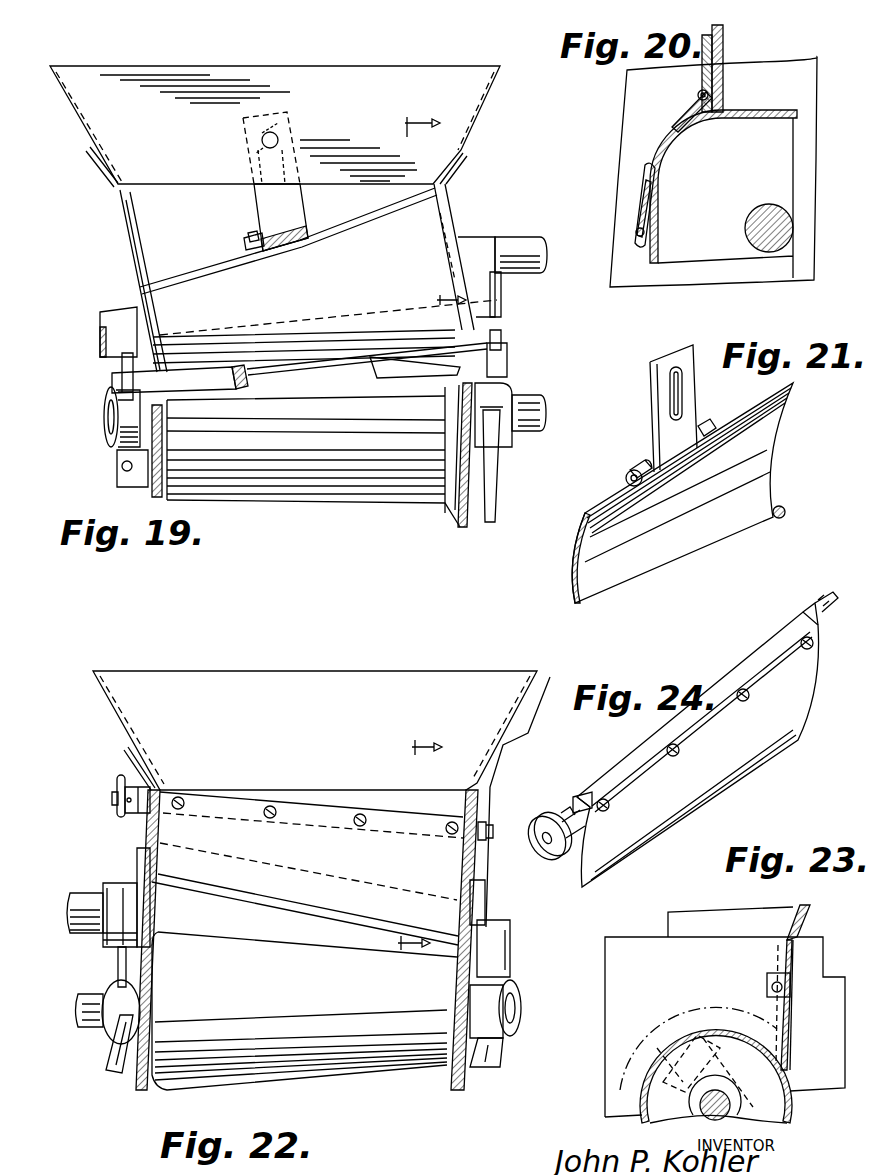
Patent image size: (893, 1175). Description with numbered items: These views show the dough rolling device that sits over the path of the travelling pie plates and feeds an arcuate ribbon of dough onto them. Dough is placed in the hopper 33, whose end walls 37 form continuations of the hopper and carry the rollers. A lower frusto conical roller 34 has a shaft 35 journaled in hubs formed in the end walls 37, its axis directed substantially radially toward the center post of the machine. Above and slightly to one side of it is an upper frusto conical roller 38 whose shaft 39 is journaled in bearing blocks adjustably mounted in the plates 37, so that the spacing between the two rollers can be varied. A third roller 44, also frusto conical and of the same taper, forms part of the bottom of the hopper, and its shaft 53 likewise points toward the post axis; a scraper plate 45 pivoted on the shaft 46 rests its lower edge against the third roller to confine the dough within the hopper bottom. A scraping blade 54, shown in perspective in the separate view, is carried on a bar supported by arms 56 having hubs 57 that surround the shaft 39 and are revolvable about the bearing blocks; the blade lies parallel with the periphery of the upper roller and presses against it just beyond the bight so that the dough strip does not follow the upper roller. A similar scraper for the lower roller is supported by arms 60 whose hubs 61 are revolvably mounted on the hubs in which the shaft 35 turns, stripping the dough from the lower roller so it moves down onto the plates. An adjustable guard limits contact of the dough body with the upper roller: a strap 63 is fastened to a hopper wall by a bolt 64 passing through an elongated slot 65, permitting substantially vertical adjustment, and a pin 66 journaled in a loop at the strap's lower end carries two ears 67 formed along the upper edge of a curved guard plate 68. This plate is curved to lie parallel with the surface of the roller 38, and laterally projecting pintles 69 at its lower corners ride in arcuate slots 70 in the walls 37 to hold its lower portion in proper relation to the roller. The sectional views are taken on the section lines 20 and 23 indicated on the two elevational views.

In FIG. 19, the section line 20— 20 is at (435, 204).
In FIG. 22, the section line 23— 23 is at (406, 838).
In FIG. 19, the hopper 33 is at (275, 126).
In FIG. 23, the hopper 33 is at (725, 1011).
In FIG. 22, the hopper 33 is at (321, 799).
In FIG. 19, the lower frusto conical roller 34 is at (313, 457).
In FIG. 22, the lower frusto conical roller 34 is at (304, 1011).
In FIG. 19, the shaft 35 is at (533, 396).
In FIG. 22, the shaft 35 is at (76, 1016).
In FIG. 19, the end walls 37 is at (165, 497).
In FIG. 20, the end walls 37 is at (728, 45).
In FIG. 22, the end walls 37 is at (147, 838).
In FIG. 20, the upper frusto conical roller 38 is at (695, 143).
In FIG. 19, the shaft 39 is at (513, 246).
In FIG. 20, the shaft 39 is at (752, 213).
In FIG. 22, the shaft 39 is at (79, 931).
In FIG. 23, the third roller 44 is at (671, 1047).
In FIG. 23, the scraper plate 45 is at (805, 1032).
In FIG. 23, the shaft 46 is at (765, 988).
In FIG. 23, the shaft 53 is at (703, 1120).
In FIG. 19, the scraping blade 54 is at (254, 388).
In FIG. 24, the scraping blade 54 is at (679, 739).
In FIG. 22, the scraping blade 54 is at (307, 868).
In FIG. 19, the arms 56 is at (503, 308).
In FIG. 22, the arms 56 is at (117, 968).
In FIG. 19, the hubs 57 is at (110, 343).
In FIG. 19, the arms 60 is at (112, 425).
In FIG. 19, the hubs 61 is at (118, 468).
In FIG. 22, the hubs 61 is at (106, 1063).
In FIG. 19, the strap 63 is at (281, 217).
In FIG. 20, the strap 63 is at (702, 70).
In FIG. 21, the strap 63 is at (651, 389).
In FIG. 19, the bolt 64 is at (283, 133).
In FIG. 19, the elongated slot 65 is at (296, 176).
In FIG. 21, the elongated slot 65 is at (684, 396).
In FIG. 19, the pin 66 is at (246, 245).
In FIG. 20, the pin 66 is at (722, 95).
In FIG. 21, the pin 66 is at (626, 477).
In FIG. 19, the ears 67 is at (247, 235).
In FIG. 21, the ears 67 is at (641, 462).
In FIG. 19, the curved guard plate 68 is at (318, 275).
In FIG. 20, the curved guard plate 68 is at (674, 120).
In FIG. 21, the curved guard plate 68 is at (682, 493).
In FIG. 20, the pintles 69 is at (636, 229).
In FIG. 21, the pintles 69 is at (784, 505).
In FIG. 20, the arcuate slots 70 is at (646, 163).